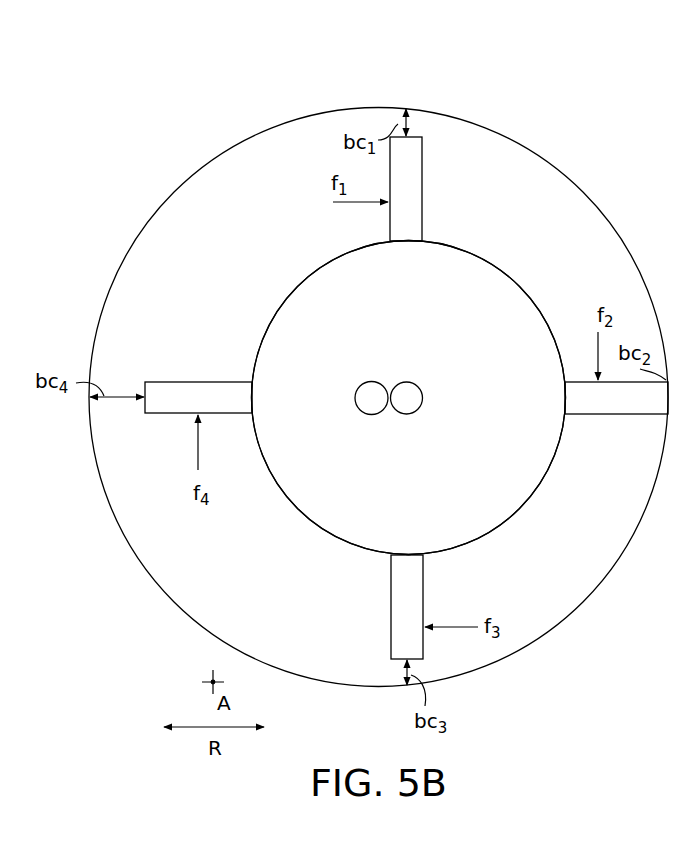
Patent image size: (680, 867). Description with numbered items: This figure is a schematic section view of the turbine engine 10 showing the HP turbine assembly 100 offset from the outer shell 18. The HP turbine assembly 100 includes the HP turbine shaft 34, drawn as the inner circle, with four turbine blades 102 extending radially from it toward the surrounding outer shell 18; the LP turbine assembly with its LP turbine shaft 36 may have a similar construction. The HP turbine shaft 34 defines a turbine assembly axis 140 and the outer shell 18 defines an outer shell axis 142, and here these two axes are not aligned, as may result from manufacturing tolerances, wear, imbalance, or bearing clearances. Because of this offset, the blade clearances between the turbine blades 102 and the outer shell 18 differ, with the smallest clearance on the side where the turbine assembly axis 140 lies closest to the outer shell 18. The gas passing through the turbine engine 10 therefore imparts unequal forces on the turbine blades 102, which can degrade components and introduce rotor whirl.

The turbine engine 10 is at (598, 128).
The outer shell 18 is at (355, 107).
The HP turbine shaft 34 is at (488, 262).
The LP turbine shaft 36 is at (409, 398).
The HP turbine assembly 100 is at (437, 152).
The turbine blades 102 is at (422, 200).
The turbine assembly axis 140 is at (408, 414).
The outer shell axis 142 is at (370, 414).